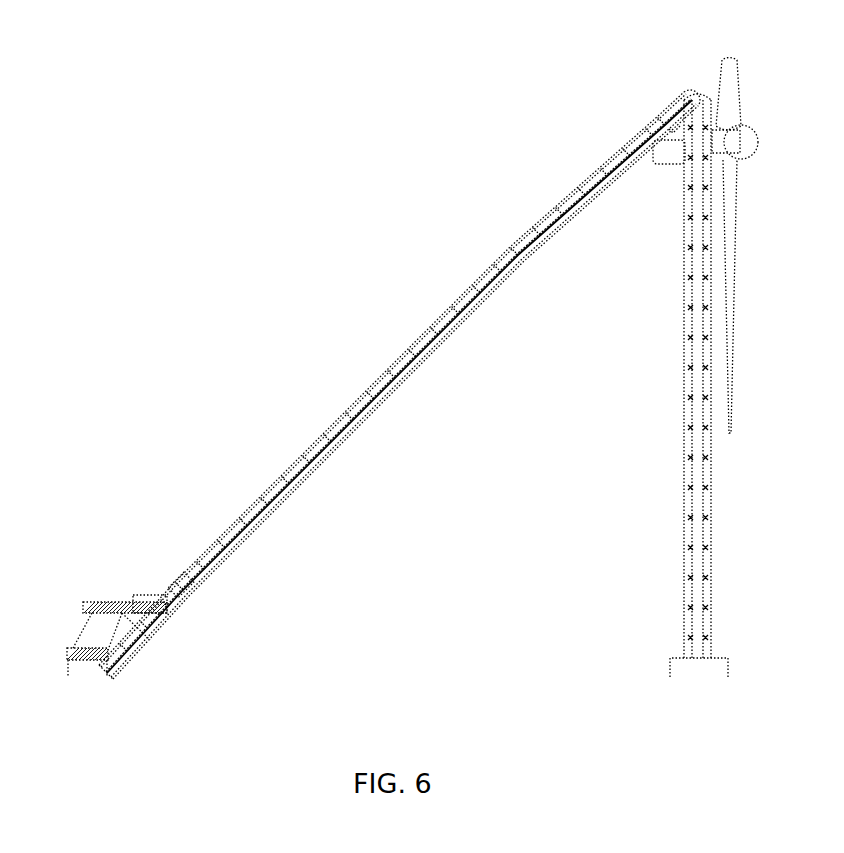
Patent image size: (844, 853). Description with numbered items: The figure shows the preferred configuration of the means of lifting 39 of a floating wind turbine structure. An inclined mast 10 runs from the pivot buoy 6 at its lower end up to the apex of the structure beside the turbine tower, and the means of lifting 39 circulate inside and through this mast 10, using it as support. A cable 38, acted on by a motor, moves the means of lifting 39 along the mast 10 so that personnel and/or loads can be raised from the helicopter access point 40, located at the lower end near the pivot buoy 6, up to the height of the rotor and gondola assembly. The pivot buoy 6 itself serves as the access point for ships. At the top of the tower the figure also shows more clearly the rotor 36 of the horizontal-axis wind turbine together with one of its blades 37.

The pivot buoy 6 is at (88, 666).
The mast 10 is at (518, 252).
The rotor 36 is at (742, 143).
The blade 37 is at (733, 192).
The cable 38 is at (665, 125).
The means of lifting 39 is at (183, 590).
The helicopter access point 40 is at (110, 611).